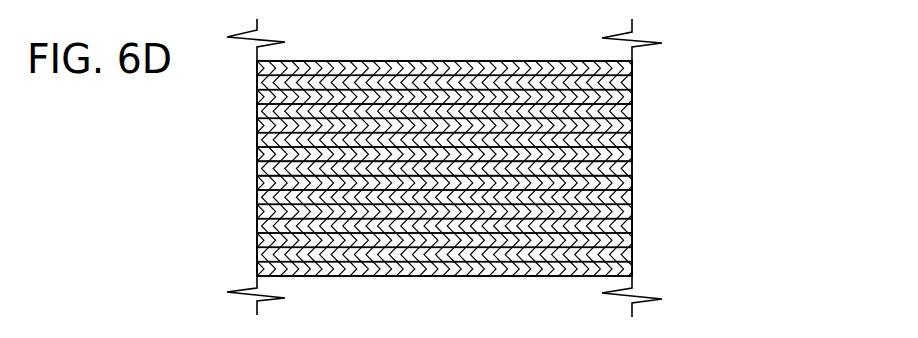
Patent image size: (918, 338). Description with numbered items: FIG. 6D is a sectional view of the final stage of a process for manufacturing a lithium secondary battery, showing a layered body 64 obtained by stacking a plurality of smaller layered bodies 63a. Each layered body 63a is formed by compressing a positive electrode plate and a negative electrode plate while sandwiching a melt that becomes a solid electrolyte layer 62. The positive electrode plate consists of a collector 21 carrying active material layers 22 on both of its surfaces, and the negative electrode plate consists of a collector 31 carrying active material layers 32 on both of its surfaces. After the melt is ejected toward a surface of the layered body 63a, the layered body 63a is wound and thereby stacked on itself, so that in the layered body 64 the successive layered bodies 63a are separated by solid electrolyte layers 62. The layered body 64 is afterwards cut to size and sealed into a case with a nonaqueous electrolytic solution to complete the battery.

The active material layers 22 is at (633, 212).
The collector 21 is at (633, 198).
The solid electrolyte layer 62 is at (257, 166).
The active material layers 32 is at (633, 269).
The collector 31 is at (633, 254).
The layered body 63a is at (732, 273).
The layered body 64 is at (799, 63).